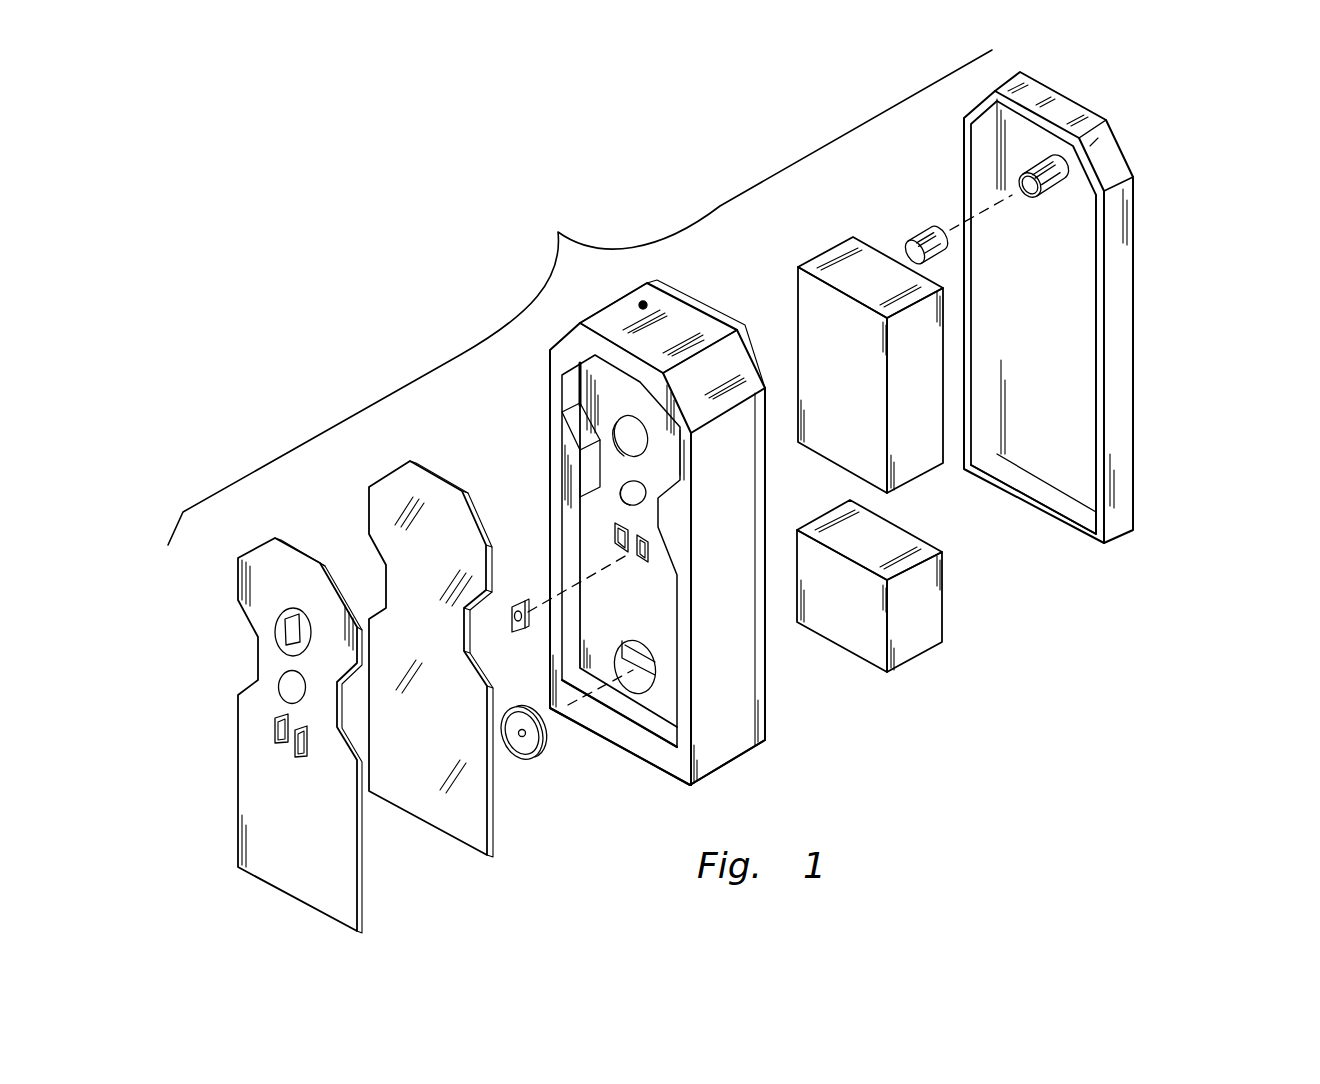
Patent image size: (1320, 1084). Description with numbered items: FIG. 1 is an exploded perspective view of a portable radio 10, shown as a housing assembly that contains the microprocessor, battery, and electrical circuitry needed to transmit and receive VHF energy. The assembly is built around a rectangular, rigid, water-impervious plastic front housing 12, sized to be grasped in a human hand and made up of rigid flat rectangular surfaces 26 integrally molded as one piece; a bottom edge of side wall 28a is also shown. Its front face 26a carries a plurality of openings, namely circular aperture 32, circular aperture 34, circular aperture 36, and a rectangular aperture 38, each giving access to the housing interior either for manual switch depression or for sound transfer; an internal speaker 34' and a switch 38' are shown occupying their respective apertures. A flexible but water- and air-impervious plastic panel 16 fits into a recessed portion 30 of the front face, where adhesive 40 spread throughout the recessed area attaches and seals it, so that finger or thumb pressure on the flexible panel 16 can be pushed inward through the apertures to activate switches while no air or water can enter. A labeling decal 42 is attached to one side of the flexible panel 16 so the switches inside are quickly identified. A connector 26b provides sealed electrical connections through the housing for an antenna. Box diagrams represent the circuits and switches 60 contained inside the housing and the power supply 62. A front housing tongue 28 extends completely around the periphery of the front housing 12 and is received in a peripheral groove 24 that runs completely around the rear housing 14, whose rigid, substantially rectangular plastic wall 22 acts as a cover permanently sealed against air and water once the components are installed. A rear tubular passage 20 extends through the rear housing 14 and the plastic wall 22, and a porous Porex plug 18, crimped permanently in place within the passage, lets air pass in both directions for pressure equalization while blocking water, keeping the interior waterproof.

The portable radio 10 is at (580, 297).
The front housing 12 is at (778, 753).
The rear housing 14 is at (1157, 504).
The flexible panel 16 is at (462, 849).
The porous Porex plug 18 is at (918, 237).
The rear tubular passage 20 is at (1040, 173).
The rectangular plastic wall 22 is at (1069, 286).
The peripheral groove 24 is at (1108, 370).
The rigid flat rectangular surfaces 26 is at (742, 393).
The front face 26a is at (613, 727).
The connector 26b is at (640, 304).
The front housing tongue 28 is at (765, 668).
The bottom edge of side wall 28a is at (753, 727).
The recessed portion 30 is at (562, 433).
The circular aperture 32 is at (647, 443).
The circular aperture 34 is at (630, 734).
The internal speaker 34' is at (524, 770).
The circular aperture 36 is at (622, 493).
The rectangular aperture 38 is at (576, 561).
The switch 38' is at (513, 635).
The adhesive 40 is at (580, 387).
The labeling decal 42 is at (326, 565).
The circuits and switches 60 is at (915, 457).
The power supply 62 is at (913, 625).